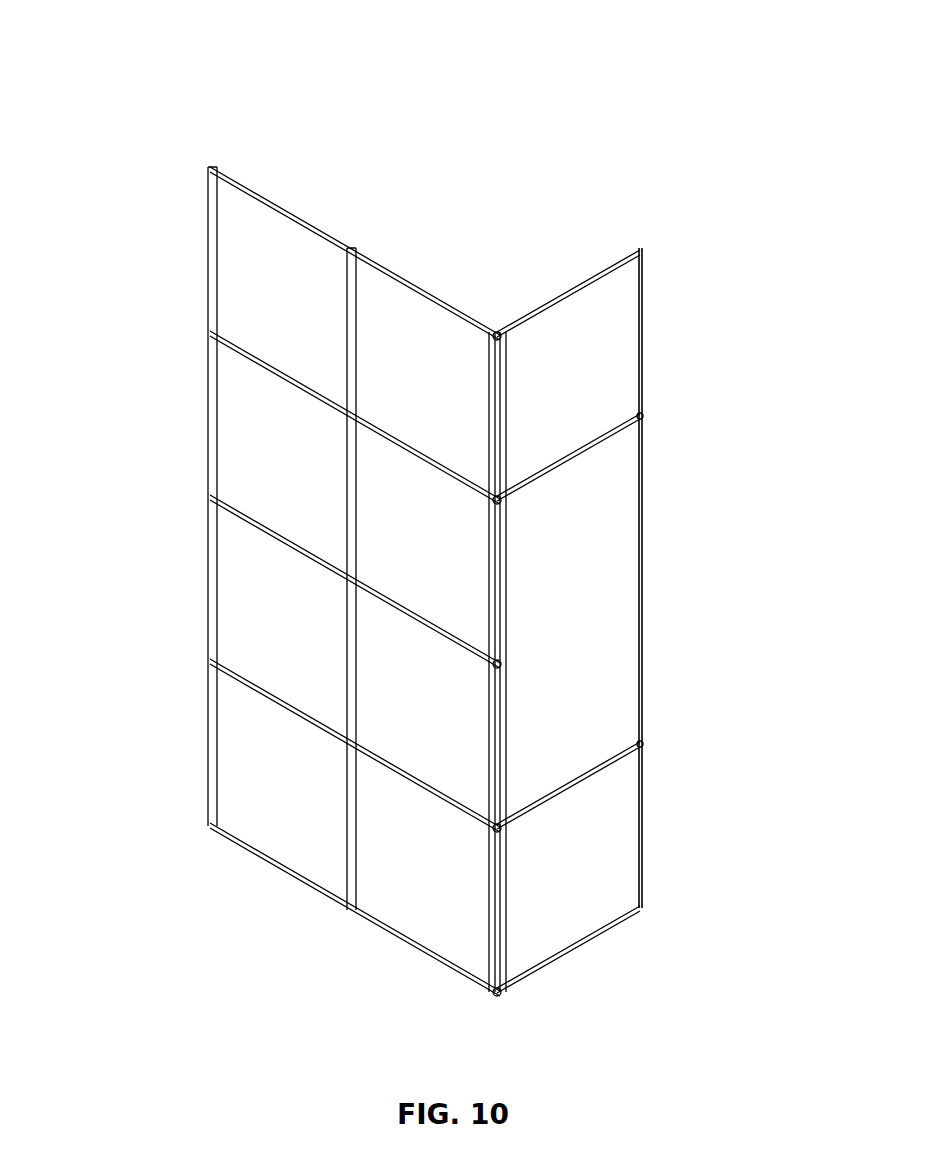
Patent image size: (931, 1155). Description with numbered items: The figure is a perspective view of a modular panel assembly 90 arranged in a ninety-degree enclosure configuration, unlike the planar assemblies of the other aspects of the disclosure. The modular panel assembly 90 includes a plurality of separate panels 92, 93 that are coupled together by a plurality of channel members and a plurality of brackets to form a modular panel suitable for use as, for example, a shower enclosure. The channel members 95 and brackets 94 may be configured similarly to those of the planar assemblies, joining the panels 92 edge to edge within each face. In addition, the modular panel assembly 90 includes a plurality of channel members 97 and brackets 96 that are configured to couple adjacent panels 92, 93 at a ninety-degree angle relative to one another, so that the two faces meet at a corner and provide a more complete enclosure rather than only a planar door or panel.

The modular panel assembly 90 is at (128, 67).
The panel 92 is at (283, 258).
The panel 93 is at (432, 515).
The bracket 94 is at (215, 338).
The channel member 95 is at (592, 448).
The bracket 96 is at (497, 330).
The channel member 97 is at (503, 635).